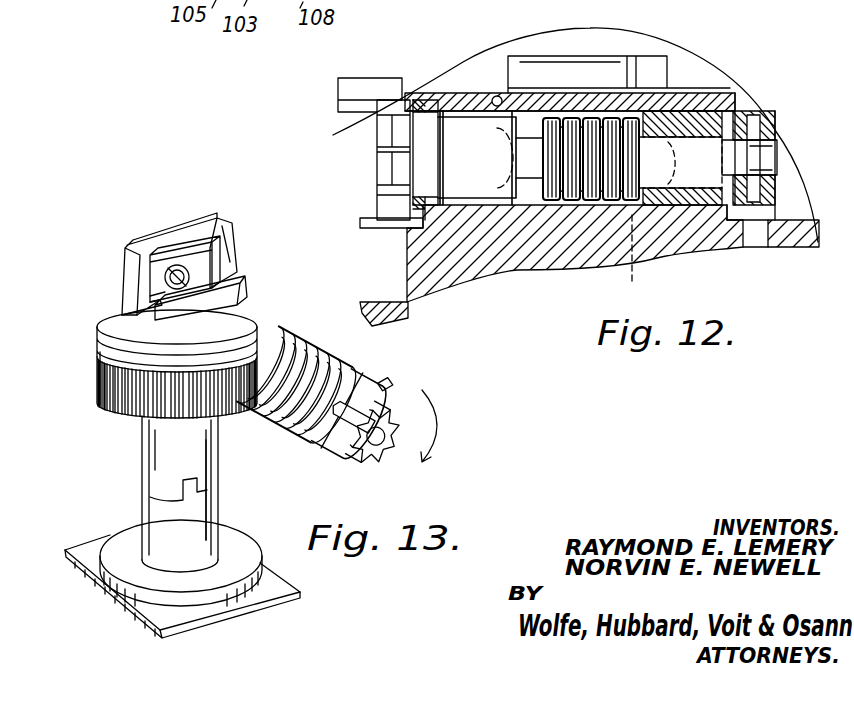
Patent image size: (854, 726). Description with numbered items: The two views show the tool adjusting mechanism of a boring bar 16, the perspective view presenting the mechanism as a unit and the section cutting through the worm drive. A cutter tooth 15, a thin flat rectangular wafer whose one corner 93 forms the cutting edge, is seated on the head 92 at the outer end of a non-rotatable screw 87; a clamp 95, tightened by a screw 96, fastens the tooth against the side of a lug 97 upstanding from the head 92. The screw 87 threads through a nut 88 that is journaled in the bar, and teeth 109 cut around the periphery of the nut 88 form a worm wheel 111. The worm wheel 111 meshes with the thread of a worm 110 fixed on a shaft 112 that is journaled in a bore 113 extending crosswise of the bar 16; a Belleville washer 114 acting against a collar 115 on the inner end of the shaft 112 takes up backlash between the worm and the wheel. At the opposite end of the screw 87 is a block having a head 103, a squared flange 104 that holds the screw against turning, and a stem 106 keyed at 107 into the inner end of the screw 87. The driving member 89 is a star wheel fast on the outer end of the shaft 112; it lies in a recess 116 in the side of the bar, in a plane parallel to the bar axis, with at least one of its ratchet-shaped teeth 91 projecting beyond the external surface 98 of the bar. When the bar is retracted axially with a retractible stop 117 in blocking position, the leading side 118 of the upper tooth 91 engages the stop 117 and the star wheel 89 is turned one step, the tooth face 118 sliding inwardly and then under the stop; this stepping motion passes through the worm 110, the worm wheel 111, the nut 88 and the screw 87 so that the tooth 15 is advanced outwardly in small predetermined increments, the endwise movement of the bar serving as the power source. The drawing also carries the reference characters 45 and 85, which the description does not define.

In FIG. 13, the cutter tooth 15 is at (232, 240).
In FIG. 12, the boring bar 16 is at (487, 280).
In FIG. 12, the housing wall portion 45 is at (405, 282).
In FIG. 13, the clamp assembly 85 is at (175, 236).
In FIG. 13, the non-rotatable screw 87 is at (160, 437).
In FIG. 13, the nut 88 is at (142, 375).
In FIG. 13, the star wheel (driving member) 89 is at (435, 440).
In FIG. 12, the star wheel (driving member) 89 is at (383, 200).
In FIG. 13, the teeth of star wheel 91 is at (403, 396).
In FIG. 12, the teeth of star wheel 91 is at (377, 130).
In FIG. 13, the screw head 92 is at (203, 295).
In FIG. 12, the screw head 92 is at (603, 67).
In FIG. 13, the corner (cutting edge) 93 is at (223, 222).
In FIG. 13, the clamp 95 is at (130, 300).
In FIG. 13, the clamp screw 96 is at (183, 268).
In FIG. 13, the lug 97 is at (128, 262).
In FIG. 12, the external surface of boring bar 98 is at (453, 92).
In FIG. 13, the block head 103 is at (120, 543).
In FIG. 13, the squared flange 104 is at (112, 603).
In FIG. 13, the stem 106 is at (215, 523).
In FIG. 13, the key 107 is at (200, 487).
In FIG. 13, the teeth of nut 109 is at (98, 380).
In FIG. 13, the worm 110 is at (283, 326).
In FIG. 12, the worm 110 is at (584, 206).
In FIG. 13, the worm wheel 111 is at (89, 404).
In FIG. 13, the shaft 112 is at (343, 390).
In FIG. 12, the shaft 112 is at (478, 171).
In FIG. 12, the bore 113 is at (467, 205).
In FIG. 12, the Belleville washer 114 is at (744, 108).
In FIG. 12, the collar 115 is at (772, 131).
In FIG. 12, the recess 116 is at (371, 215).
In FIG. 12, the retractible stop 117 is at (381, 83).
In FIG. 13, the leading side of tooth 118 is at (387, 395).